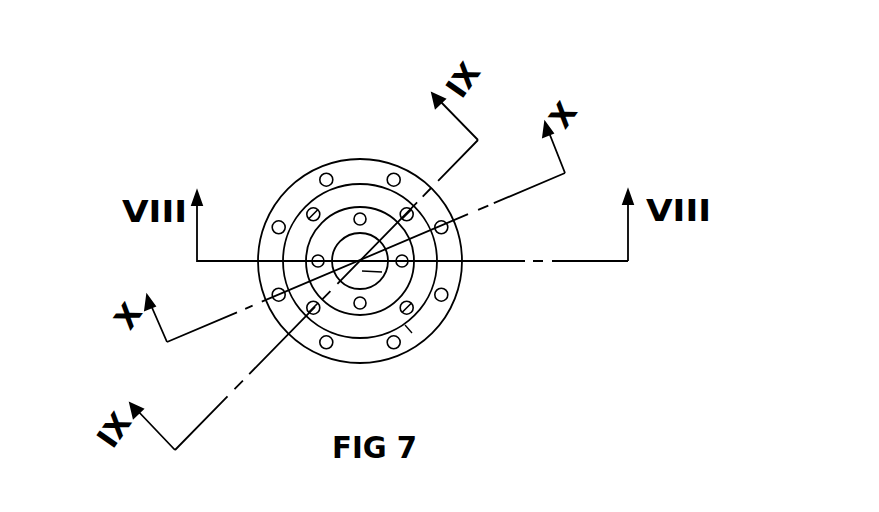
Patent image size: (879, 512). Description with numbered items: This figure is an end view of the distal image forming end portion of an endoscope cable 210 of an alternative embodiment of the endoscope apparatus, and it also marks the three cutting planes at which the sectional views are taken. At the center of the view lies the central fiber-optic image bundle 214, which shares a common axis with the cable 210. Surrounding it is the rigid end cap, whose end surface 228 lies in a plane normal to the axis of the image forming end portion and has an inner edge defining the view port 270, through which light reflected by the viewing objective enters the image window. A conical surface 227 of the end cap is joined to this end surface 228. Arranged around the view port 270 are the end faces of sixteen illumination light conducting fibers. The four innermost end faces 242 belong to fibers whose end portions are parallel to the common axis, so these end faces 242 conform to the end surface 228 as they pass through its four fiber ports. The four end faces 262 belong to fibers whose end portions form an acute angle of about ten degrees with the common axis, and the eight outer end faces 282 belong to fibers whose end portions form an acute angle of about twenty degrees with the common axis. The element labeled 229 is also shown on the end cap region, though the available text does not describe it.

The endoscope cable 210 is at (555, 384).
The central fiber-optic image bundle 214 is at (455, 322).
The conical surface 227 is at (422, 275).
The end surface 228 is at (330, 198).
The outer ring 229 is at (410, 330).
The end face 242 is at (358, 220).
The end face 262 is at (312, 215).
The view port 270 is at (345, 253).
The end face 282 is at (450, 298).